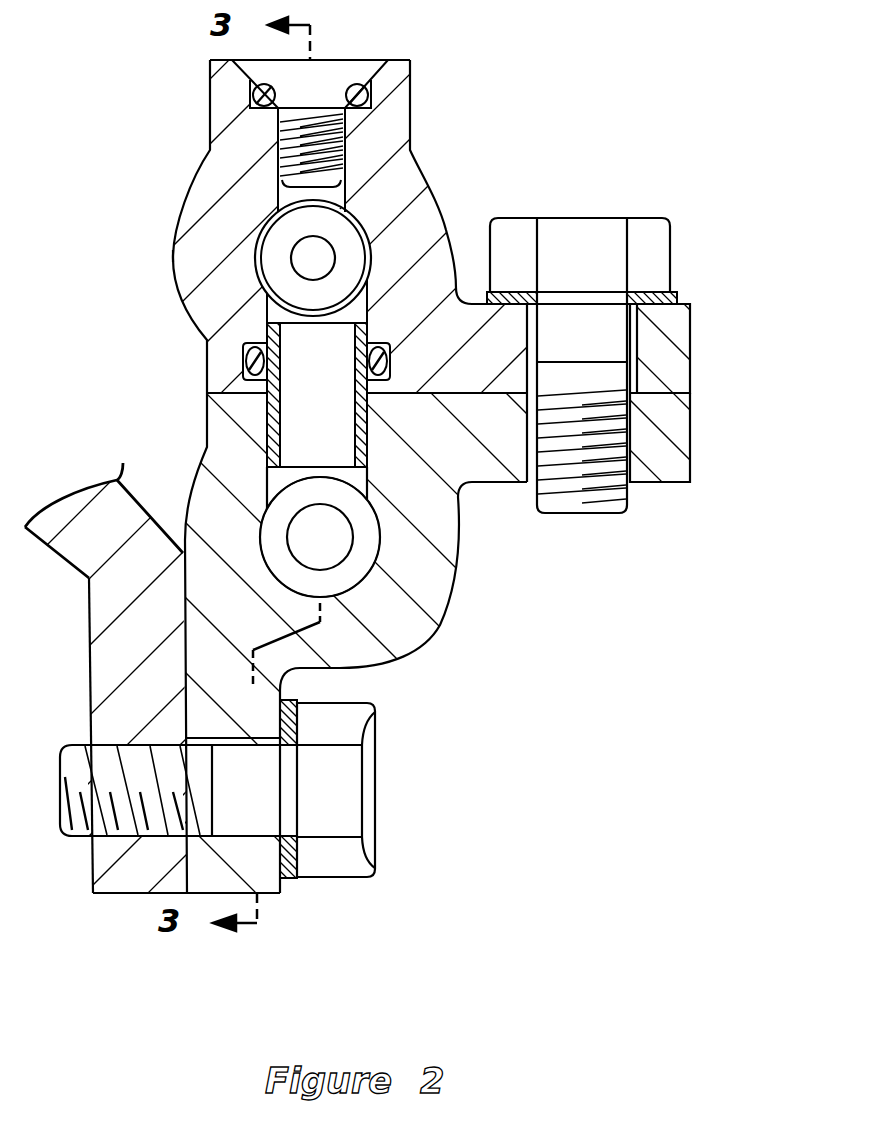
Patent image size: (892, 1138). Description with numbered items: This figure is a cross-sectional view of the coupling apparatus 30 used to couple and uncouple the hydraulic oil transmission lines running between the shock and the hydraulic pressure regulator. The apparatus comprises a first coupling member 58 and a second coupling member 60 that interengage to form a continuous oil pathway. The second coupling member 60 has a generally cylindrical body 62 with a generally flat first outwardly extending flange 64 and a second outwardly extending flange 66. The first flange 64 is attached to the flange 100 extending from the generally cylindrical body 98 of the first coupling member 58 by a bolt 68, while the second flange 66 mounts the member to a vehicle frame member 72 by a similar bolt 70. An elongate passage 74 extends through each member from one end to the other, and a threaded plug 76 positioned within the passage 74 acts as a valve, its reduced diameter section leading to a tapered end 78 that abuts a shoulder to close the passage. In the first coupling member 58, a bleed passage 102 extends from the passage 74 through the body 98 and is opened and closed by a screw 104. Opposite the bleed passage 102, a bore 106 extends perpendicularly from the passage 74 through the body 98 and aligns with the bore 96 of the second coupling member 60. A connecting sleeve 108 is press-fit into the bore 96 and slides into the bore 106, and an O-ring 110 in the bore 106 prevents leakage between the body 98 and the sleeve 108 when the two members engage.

The coupling apparatus 30 is at (558, 114).
The first coupling member 58 is at (168, 109).
The second coupling member 60 is at (492, 631).
The cylindrical body 62 is at (430, 618).
The first outwardly extending flange 64 is at (667, 460).
The second outwardly extending flange 66 is at (267, 882).
The bolt 68 is at (590, 232).
The bolt 70 is at (357, 784).
The vehicle frame member 72 is at (130, 882).
The elongate passage 74 is at (257, 252).
The plug 76 is at (360, 235).
The tapered end 78 is at (280, 230).
The bore 96 is at (362, 478).
The cylindrical body 98 is at (173, 277).
The flange 100 is at (685, 340).
The bleed passage 102 is at (335, 192).
The screw 104 is at (347, 63).
The bore 106 is at (278, 313).
The connecting sleeve 108 is at (270, 431).
The O-ring 110 is at (243, 360).